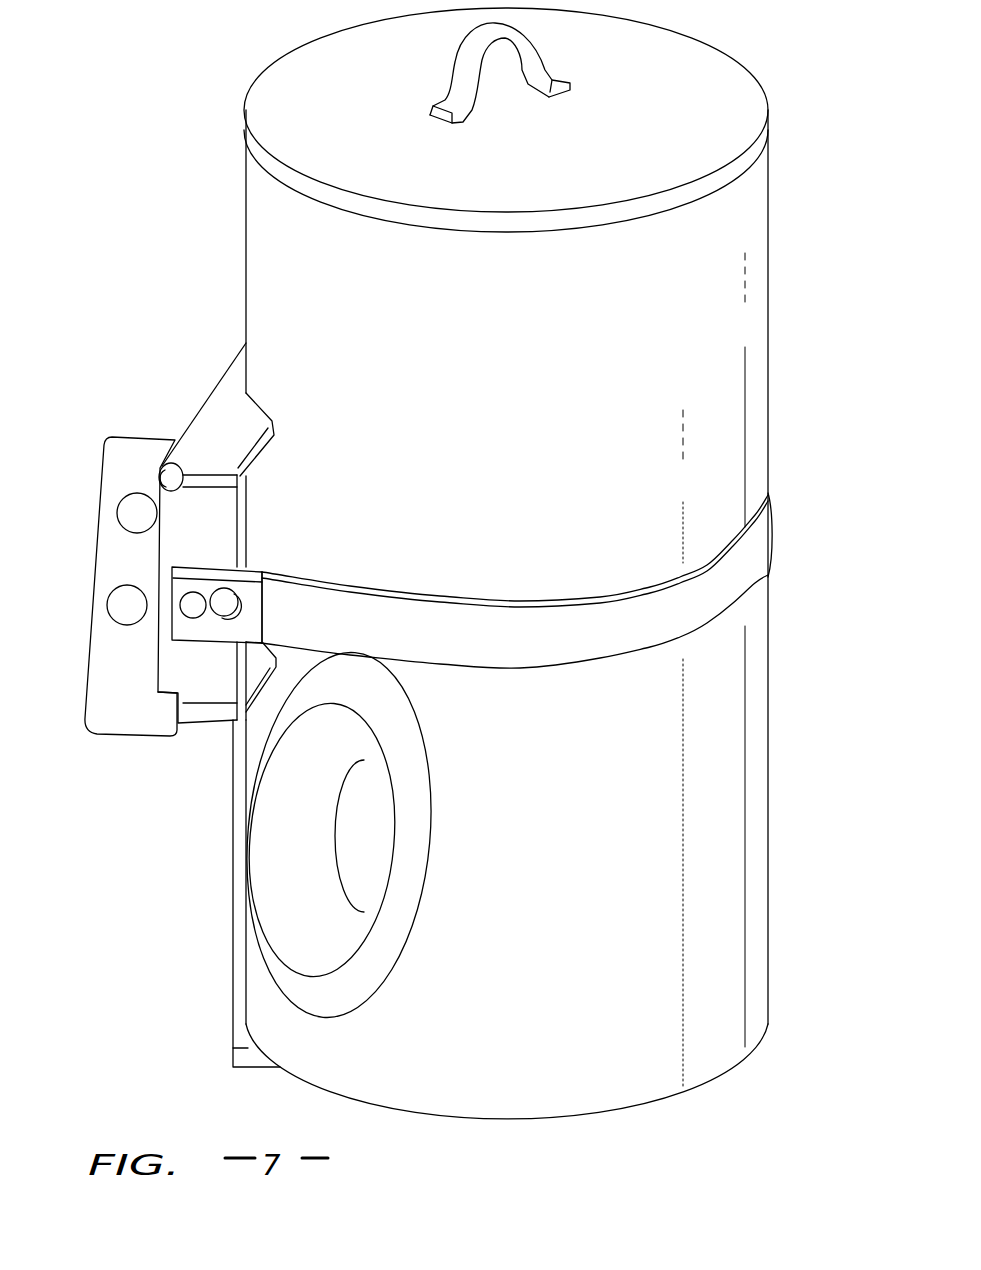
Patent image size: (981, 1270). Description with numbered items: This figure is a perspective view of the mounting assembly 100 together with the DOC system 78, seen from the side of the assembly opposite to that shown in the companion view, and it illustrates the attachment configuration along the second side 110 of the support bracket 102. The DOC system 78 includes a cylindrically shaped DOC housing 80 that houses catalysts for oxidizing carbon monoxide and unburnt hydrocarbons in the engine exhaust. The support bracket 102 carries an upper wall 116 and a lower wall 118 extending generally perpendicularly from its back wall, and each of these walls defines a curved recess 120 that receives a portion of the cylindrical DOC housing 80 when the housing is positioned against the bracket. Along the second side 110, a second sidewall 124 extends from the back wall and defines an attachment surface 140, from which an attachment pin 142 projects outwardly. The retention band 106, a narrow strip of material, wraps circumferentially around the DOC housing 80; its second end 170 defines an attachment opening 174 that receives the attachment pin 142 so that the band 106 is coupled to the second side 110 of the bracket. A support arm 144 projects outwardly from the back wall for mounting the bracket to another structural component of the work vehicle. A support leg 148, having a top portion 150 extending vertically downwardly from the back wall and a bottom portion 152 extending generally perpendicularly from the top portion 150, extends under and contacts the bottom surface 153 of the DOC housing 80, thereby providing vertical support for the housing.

The diesel oxidation catalyst (DOC) system 78 is at (317, 70).
The DOC housing 80 is at (262, 200).
The mounting assembly 100 is at (231, 686).
The support bracket 102 is at (275, 525).
The retention band 106 is at (565, 636).
The second side 110 is at (255, 500).
The upper wall 116 is at (225, 400).
The lower wall 118 is at (273, 660).
The curved recess 120 is at (248, 393).
The second sidewall 124 is at (245, 540).
The attachment surface 140 is at (185, 530).
The attachment pin 142 is at (195, 608).
The support arm 144 is at (103, 708).
The support leg 148 is at (222, 913).
The top portion 150 is at (240, 865).
The bottom portion 152 is at (248, 1058).
The bottom surface 153 is at (622, 1118).
The second end 170 is at (240, 600).
The attachment opening 174 is at (262, 617).